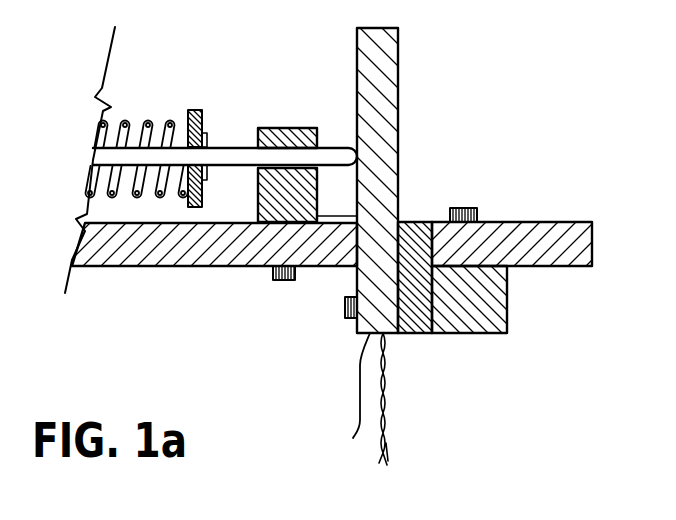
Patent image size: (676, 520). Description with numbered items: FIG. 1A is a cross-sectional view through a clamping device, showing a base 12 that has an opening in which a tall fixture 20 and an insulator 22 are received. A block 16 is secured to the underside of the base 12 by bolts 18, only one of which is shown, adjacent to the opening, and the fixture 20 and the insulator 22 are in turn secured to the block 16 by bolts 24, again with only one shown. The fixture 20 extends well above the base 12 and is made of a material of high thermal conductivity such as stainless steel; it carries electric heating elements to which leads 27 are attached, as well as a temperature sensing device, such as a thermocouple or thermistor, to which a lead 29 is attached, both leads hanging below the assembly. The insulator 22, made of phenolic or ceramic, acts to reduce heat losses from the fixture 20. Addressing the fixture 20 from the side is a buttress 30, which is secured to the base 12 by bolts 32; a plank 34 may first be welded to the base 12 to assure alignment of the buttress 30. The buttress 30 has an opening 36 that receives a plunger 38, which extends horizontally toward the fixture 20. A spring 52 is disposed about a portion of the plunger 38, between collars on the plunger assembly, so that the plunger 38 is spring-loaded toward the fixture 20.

The base 12 is at (143, 267).
The block 16 is at (508, 318).
The bolts 18 is at (465, 207).
The fixture 20 is at (400, 90).
The insulator 22 is at (418, 334).
The bolts 24 is at (343, 317).
The leads 27 is at (395, 401).
The lead 29 is at (358, 383).
The buttress 30 is at (297, 127).
The bolts 32 is at (272, 281).
The plank 34 is at (338, 218).
The opening 36 is at (258, 147).
The plunger 38 is at (223, 147).
The spring 52 is at (125, 118).